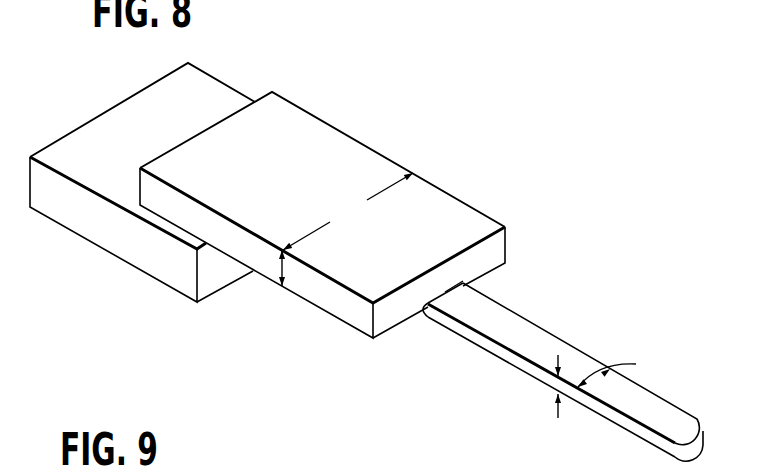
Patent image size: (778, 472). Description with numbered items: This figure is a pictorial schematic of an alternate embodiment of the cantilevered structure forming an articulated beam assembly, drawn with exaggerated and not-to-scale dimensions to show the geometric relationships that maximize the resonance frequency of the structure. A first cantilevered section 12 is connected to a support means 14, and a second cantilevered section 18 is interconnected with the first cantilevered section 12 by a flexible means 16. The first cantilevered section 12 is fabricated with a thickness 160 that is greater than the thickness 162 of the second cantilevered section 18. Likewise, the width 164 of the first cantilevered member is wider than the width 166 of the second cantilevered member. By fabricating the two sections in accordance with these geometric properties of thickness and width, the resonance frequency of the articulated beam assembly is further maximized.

The first cantilevered section 12 is at (330, 143).
The support means 14 is at (117, 163).
The flexible means 16 is at (472, 281).
The second cantilevered section 18 is at (513, 343).
The thickness of the first cantilevered section 160 is at (282, 273).
The thickness of the second cantilevered section 162 is at (558, 386).
The width of the first cantilevered member 164 is at (348, 211).
The width of the second cantilevered member 166 is at (620, 370).